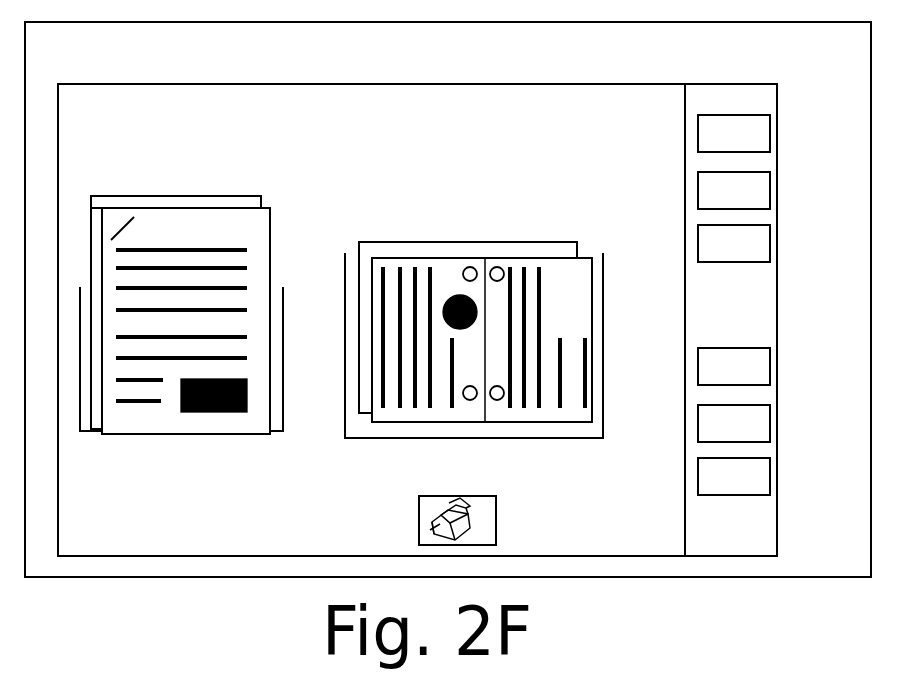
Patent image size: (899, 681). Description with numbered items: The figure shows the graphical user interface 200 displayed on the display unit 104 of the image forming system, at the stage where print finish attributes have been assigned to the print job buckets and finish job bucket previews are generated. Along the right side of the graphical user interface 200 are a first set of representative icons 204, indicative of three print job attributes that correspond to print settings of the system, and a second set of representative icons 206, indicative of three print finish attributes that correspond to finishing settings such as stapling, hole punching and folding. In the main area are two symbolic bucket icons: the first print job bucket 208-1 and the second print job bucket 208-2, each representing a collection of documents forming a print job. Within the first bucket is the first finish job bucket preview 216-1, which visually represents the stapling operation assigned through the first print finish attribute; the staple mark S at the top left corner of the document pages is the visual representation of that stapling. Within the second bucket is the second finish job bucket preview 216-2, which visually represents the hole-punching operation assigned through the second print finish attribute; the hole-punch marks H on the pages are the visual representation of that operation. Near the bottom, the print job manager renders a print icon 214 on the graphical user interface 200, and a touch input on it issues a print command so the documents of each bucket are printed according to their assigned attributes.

The display unit 104 is at (440, 57).
The graphical user interface 200 is at (535, 84).
The first set of representative icons 204 is at (770, 133).
The second set of representative icons 206 is at (770, 366).
The first print job bucket 208-1 is at (285, 403).
The second print job bucket 208-2 is at (603, 418).
The print icon 214 is at (437, 496).
The first finish job bucket preview 216-1 is at (187, 208).
The second finish job bucket preview 216-2 is at (437, 258).
The staple mark S is at (111, 240).
The hole-punch marks H is at (498, 267).